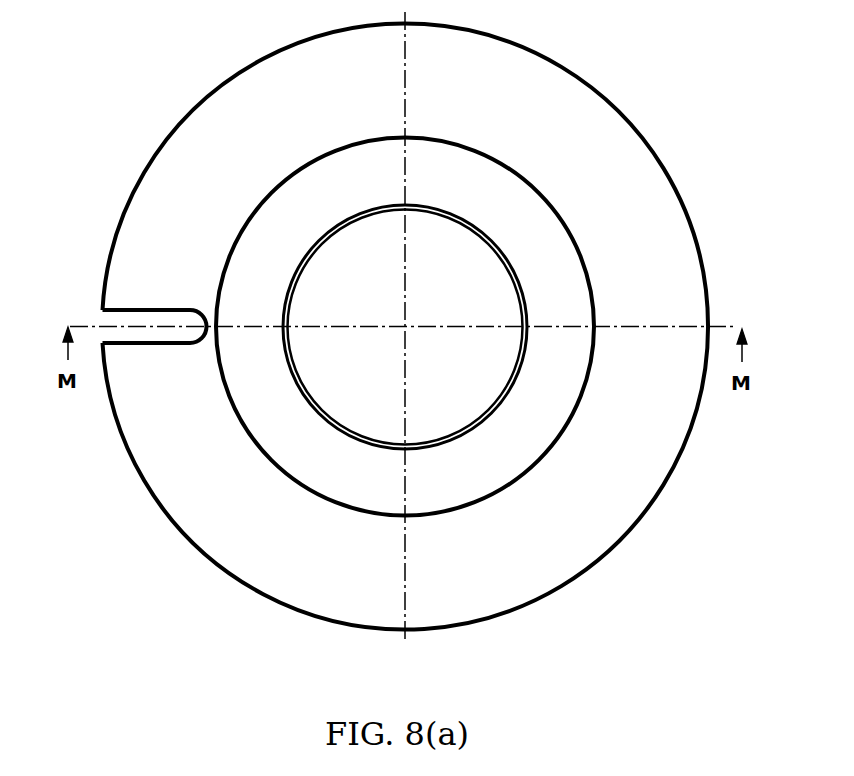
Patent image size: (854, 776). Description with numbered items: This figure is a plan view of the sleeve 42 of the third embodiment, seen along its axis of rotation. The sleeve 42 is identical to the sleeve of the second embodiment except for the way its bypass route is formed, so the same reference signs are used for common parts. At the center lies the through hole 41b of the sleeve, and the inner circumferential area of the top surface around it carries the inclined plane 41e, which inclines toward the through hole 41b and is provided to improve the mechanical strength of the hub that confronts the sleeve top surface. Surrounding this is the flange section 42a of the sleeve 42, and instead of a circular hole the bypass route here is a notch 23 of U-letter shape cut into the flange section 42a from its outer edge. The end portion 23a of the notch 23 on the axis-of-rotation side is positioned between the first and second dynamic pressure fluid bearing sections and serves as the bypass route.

The sleeve 42 is at (517, 42).
The flange section 42a is at (575, 523).
The through hole 41b is at (453, 265).
The inclined plane 41e is at (308, 452).
The notch 23 is at (120, 320).
The end portion 23a is at (197, 320).